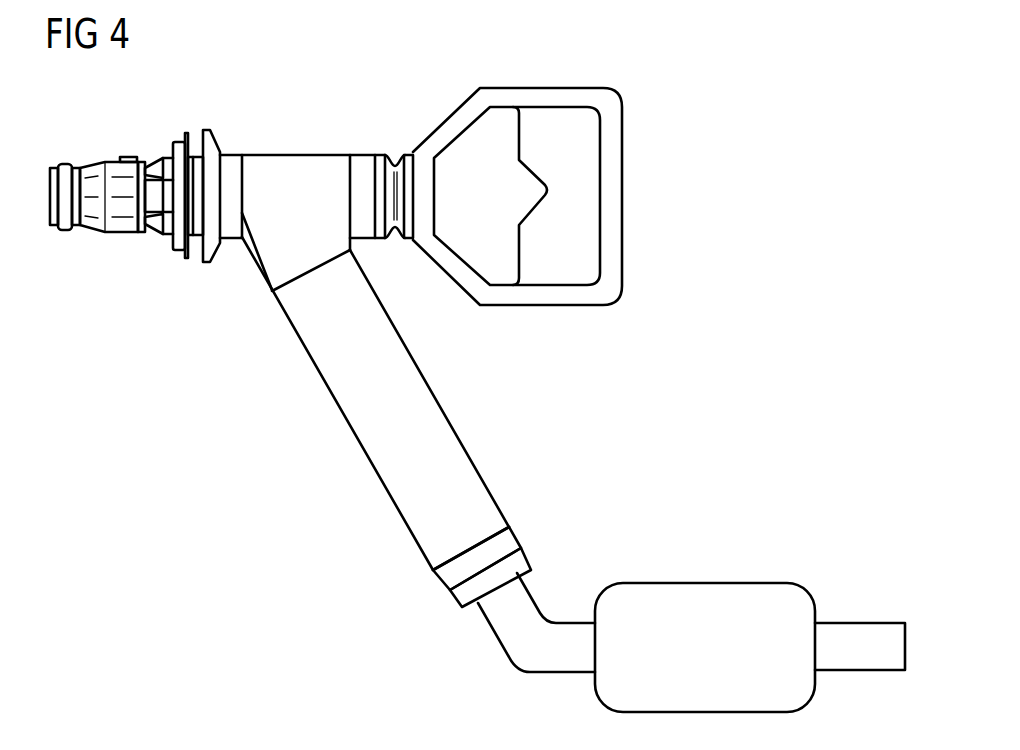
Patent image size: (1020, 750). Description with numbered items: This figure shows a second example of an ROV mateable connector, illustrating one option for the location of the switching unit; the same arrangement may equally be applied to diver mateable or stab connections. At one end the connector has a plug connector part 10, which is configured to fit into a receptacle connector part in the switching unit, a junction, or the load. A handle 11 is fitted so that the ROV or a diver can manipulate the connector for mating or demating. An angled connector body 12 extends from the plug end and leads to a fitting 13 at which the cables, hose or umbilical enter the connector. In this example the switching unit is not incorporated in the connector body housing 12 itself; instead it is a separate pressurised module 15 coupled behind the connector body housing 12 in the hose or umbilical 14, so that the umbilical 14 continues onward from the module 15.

The sensor plug connector 10 is at (98, 144).
The handle head 11 is at (650, 167).
The sensor tube 12 is at (383, 470).
The bent connecting pipe 13 is at (465, 597).
The outlet pipe 14 is at (860, 630).
The filter canister 15 is at (705, 592).